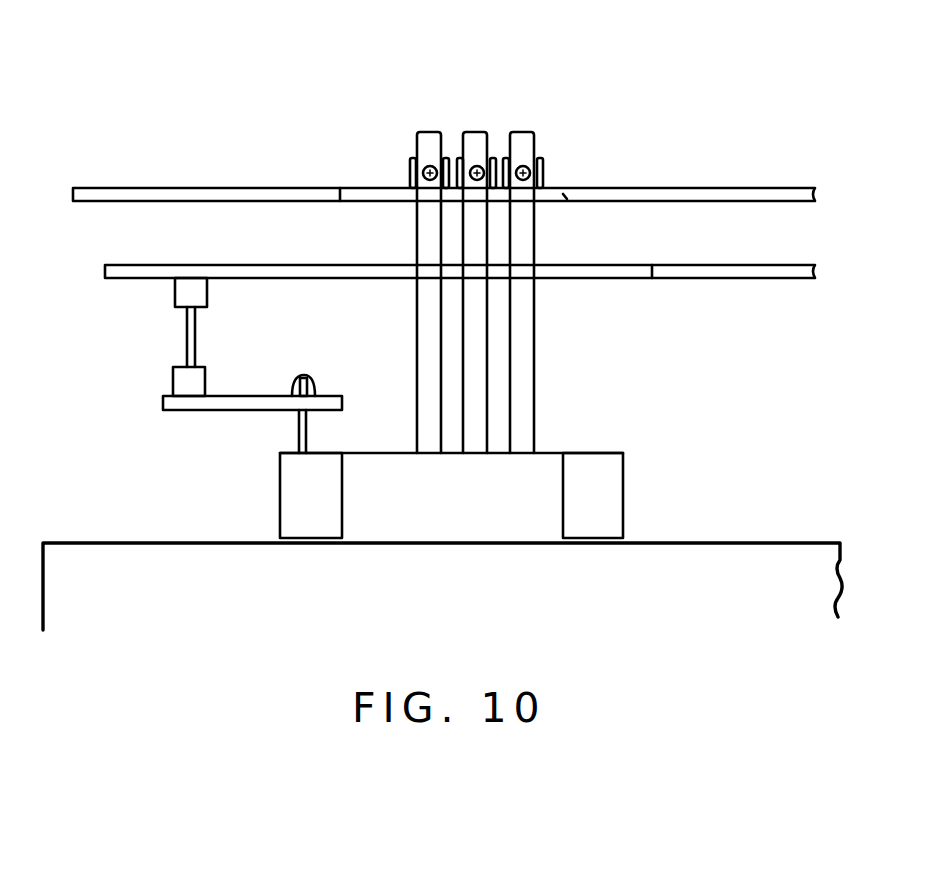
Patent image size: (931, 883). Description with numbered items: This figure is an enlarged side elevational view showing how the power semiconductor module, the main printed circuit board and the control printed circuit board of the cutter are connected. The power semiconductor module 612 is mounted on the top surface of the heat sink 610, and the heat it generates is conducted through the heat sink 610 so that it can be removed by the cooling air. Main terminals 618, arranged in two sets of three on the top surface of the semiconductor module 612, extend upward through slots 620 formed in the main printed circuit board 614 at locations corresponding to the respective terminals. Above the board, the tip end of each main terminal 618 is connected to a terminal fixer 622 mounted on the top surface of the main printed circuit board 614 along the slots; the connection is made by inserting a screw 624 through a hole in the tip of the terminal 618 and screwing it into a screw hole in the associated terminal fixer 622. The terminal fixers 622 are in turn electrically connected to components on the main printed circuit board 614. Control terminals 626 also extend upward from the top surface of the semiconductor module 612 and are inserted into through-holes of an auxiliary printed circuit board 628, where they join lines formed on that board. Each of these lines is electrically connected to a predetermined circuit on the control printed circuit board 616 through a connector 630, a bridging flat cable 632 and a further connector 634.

The heat sink 610 is at (690, 542).
The power semiconductor module 612 is at (623, 465).
The main printed circuit board 614 is at (107, 188).
The control printed circuit board 616 is at (118, 265).
The main terminals 618 is at (524, 131).
The slots 620 is at (567, 197).
The terminal fixers 622 is at (543, 167).
The screw 624 is at (422, 166).
The control terminals 626 is at (305, 375).
The auxiliary printed circuit board 628 is at (232, 410).
The connector 630 is at (173, 380).
The bridging flat cable 632 is at (187, 340).
The connector 634 is at (175, 297).